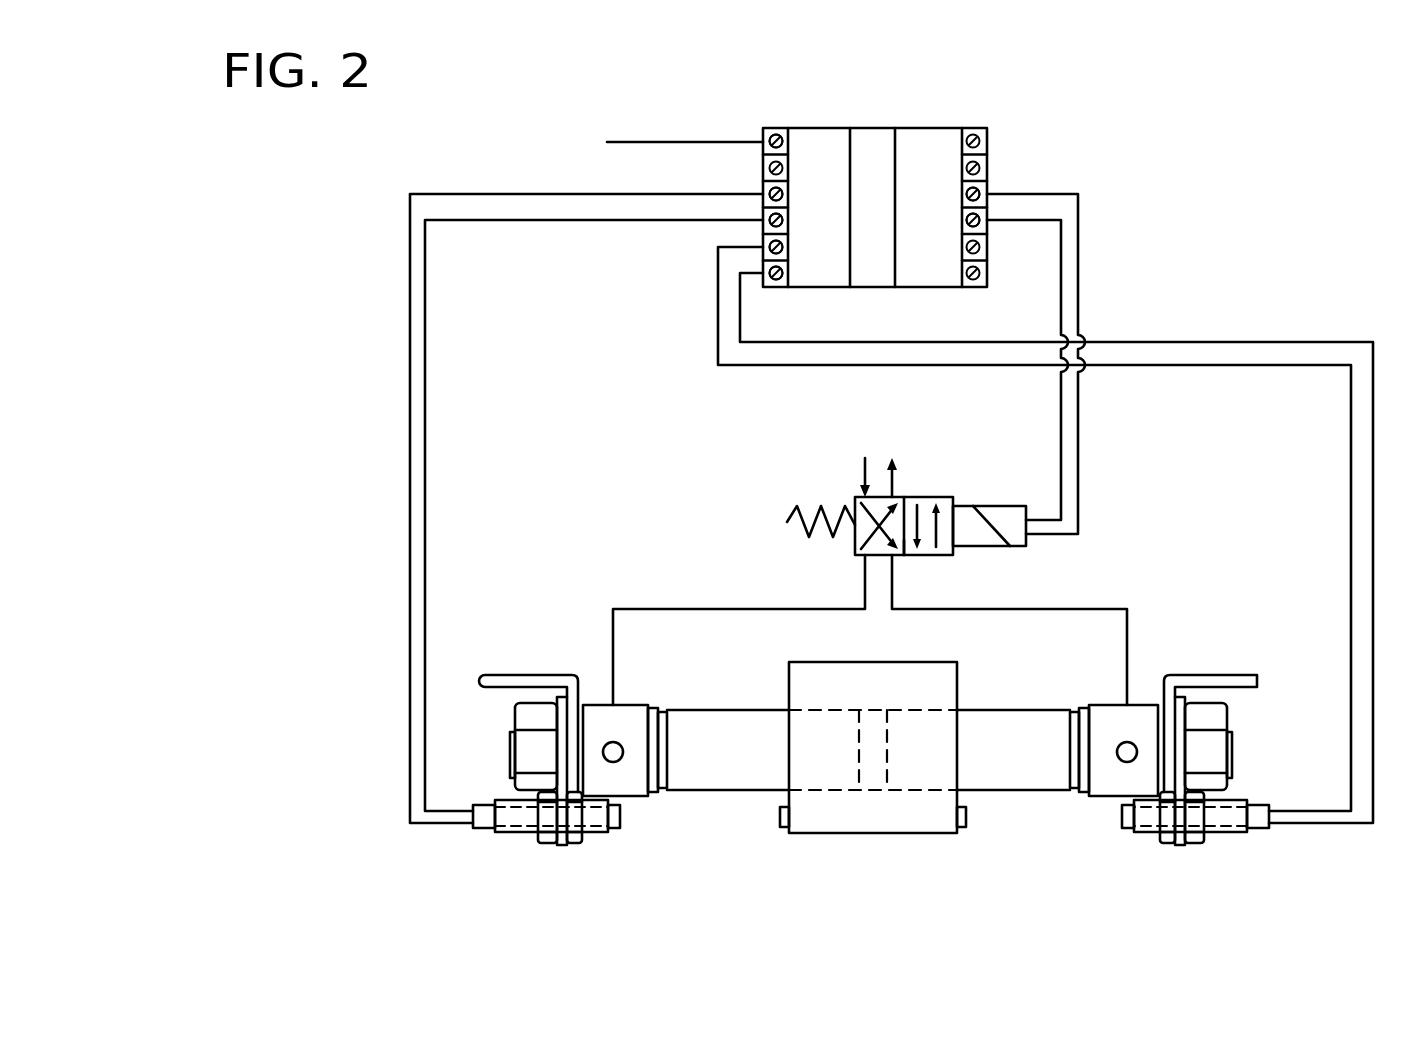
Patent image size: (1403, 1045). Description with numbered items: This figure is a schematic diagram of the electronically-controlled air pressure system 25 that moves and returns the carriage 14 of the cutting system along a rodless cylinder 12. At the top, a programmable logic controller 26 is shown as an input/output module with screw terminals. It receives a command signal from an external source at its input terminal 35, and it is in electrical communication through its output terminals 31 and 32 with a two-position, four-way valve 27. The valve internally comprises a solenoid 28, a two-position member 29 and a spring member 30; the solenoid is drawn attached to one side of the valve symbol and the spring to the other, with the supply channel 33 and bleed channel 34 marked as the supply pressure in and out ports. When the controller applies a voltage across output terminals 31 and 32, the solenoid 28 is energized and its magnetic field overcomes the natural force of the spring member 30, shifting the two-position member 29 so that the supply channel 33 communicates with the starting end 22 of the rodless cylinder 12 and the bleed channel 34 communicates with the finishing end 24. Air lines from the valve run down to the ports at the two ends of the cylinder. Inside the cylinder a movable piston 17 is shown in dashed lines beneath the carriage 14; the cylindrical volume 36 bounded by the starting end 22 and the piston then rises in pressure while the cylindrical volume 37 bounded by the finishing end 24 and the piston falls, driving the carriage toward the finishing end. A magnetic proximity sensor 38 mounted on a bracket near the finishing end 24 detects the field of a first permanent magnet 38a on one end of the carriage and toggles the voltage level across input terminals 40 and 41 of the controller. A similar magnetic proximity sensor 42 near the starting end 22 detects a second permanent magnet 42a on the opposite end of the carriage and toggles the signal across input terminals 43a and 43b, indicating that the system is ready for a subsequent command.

The rodless cylinder 12 is at (757, 792).
The carriage 14 is at (870, 836).
The movable piston 17 is at (858, 768).
The starting end 22 is at (618, 743).
The finishing end 24 is at (1120, 742).
The electronically-controlled air pressure system 25 is at (1137, 70).
The programmable logic controller 26 is at (977, 122).
The two-position valve 27 is at (948, 488).
The solenoid 28 is at (1026, 546).
The two-position member 29 is at (908, 556).
The spring member 30 is at (806, 530).
The output terminal 31 is at (979, 192).
The output terminal 32 is at (984, 223).
The supply channel 33 is at (862, 478).
The bleed channel 34 is at (894, 482).
The input terminal 35 is at (772, 130).
The cylindrical volume 36 is at (689, 800).
The cylindrical volume 37 is at (1045, 800).
The magnetic proximity sensor 38 is at (1225, 838).
The first permanent magnet 38a is at (964, 828).
The input terminal 40 is at (769, 245).
The input terminal 41 is at (776, 282).
The magnetic proximity sensor 42 is at (505, 838).
The second permanent magnet 42a is at (783, 828).
The input terminal 43a is at (767, 190).
The input terminal 43b is at (768, 218).